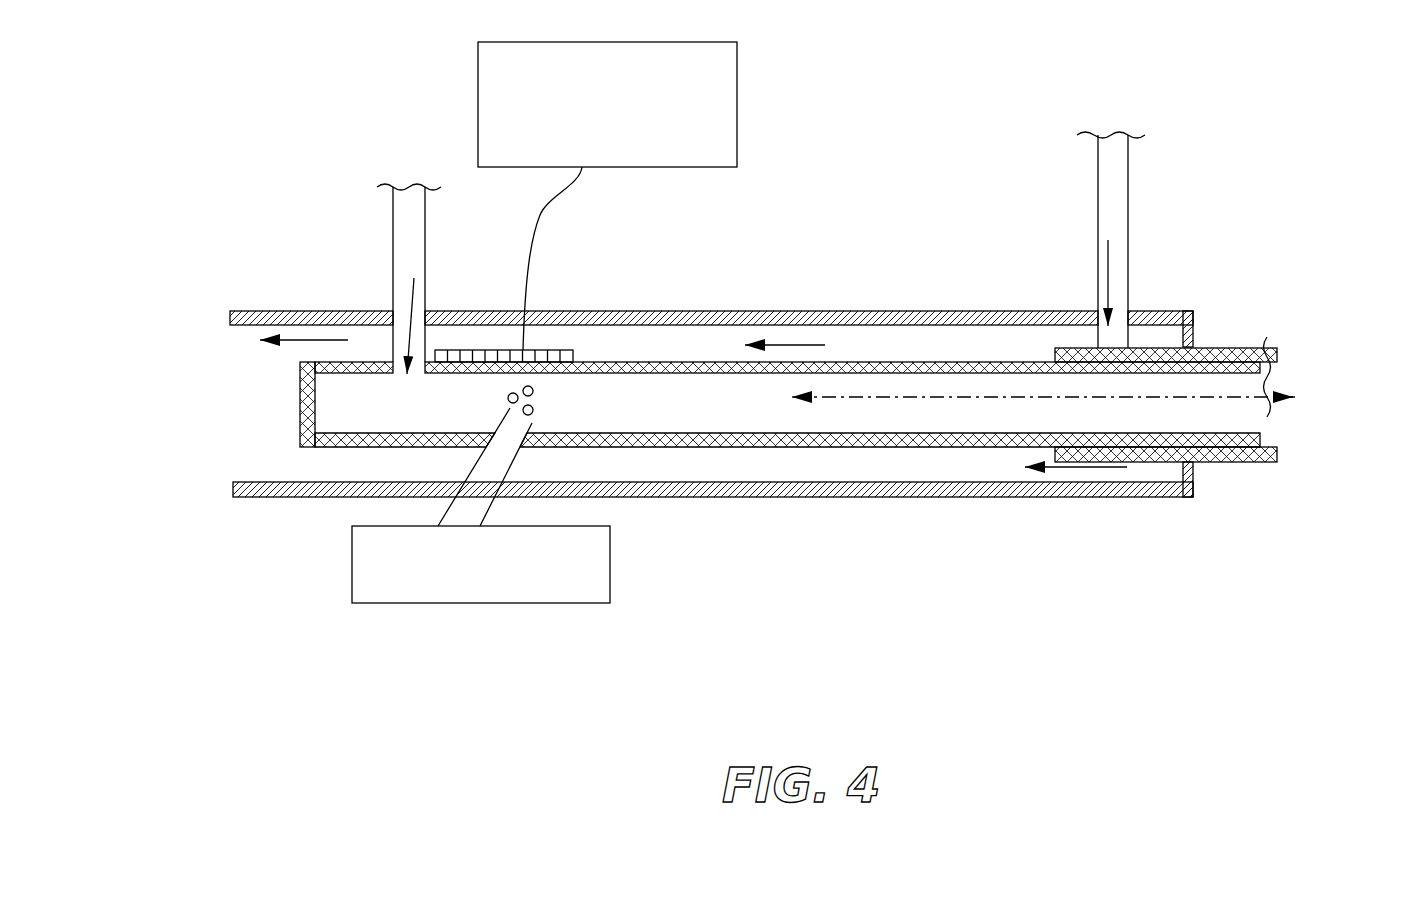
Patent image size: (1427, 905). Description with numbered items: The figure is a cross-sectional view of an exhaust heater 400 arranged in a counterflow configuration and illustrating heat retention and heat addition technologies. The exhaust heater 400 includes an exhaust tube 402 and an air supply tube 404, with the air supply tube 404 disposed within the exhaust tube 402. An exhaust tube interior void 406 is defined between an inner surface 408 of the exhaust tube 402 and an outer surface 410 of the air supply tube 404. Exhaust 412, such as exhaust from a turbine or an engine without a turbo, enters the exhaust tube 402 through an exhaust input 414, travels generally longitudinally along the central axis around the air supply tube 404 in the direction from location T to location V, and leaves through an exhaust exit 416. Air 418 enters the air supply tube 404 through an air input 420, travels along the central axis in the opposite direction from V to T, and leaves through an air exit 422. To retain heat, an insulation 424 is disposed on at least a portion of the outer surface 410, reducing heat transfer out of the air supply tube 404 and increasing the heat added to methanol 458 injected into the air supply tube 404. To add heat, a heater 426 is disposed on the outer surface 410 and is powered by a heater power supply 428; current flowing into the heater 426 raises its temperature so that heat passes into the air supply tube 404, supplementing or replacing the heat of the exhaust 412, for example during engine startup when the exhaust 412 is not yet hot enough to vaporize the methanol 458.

The exhaust heater 400 is at (800, 115).
The exhaust tube 402 is at (880, 497).
The air supply tube 404 is at (688, 362).
The exhaust tube interior void 406 is at (990, 340).
The inner surface 408 is at (848, 326).
The outer surface 410 is at (1033, 362).
The exhaust 412 is at (1113, 217).
The exhaust input 414 is at (1114, 162).
The exhaust exit 416 is at (250, 384).
The air 418 is at (410, 247).
The air input 420 is at (406, 196).
The air exit 422 is at (1262, 423).
The insulation 424 is at (1233, 458).
The heater 426 is at (575, 352).
The heater power supply 428 is at (607, 196).
The methanol 458 is at (481, 494).